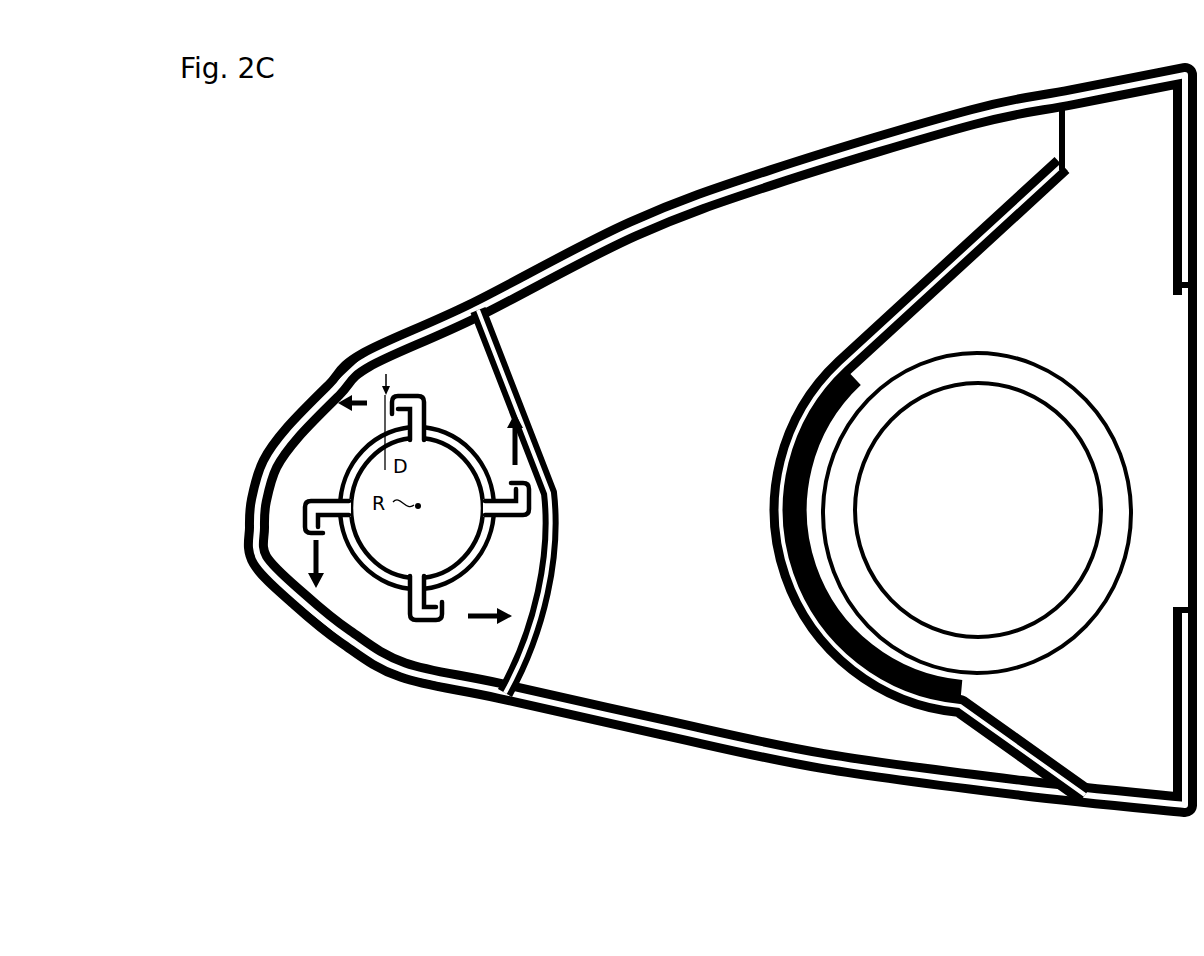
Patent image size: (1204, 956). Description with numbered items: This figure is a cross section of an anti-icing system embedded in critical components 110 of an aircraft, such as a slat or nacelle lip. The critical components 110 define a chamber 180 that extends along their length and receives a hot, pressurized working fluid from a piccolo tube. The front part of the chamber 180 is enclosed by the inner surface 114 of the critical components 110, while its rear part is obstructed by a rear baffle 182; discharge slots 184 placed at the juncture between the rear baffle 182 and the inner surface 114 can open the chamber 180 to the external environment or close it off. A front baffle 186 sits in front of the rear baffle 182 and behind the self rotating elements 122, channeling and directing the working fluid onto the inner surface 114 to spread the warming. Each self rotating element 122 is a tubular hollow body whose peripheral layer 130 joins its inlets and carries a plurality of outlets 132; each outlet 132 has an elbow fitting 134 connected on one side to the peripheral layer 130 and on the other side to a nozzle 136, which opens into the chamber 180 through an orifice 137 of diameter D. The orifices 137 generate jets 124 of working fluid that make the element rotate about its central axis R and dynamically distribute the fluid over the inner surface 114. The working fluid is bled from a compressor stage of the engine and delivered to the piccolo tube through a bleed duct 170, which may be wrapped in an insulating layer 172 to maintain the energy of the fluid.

The critical components 110 is at (628, 188).
The inner surface 114 is at (435, 670).
The self rotating elements 122 is at (372, 626).
The jets 124 is at (367, 352).
The peripheral layer 130 is at (353, 580).
The outlets 132 is at (392, 479).
The elbow fitting 134 is at (432, 395).
The nozzle 136 is at (393, 411).
The orifice 137 is at (407, 411).
The bleed duct 170 is at (1088, 452).
The insulating layer 172 is at (1040, 347).
The chamber 180 is at (933, 452).
The rear baffle 182 is at (862, 342).
The discharge slots 184 is at (1110, 800).
The front baffle 186 is at (553, 472).